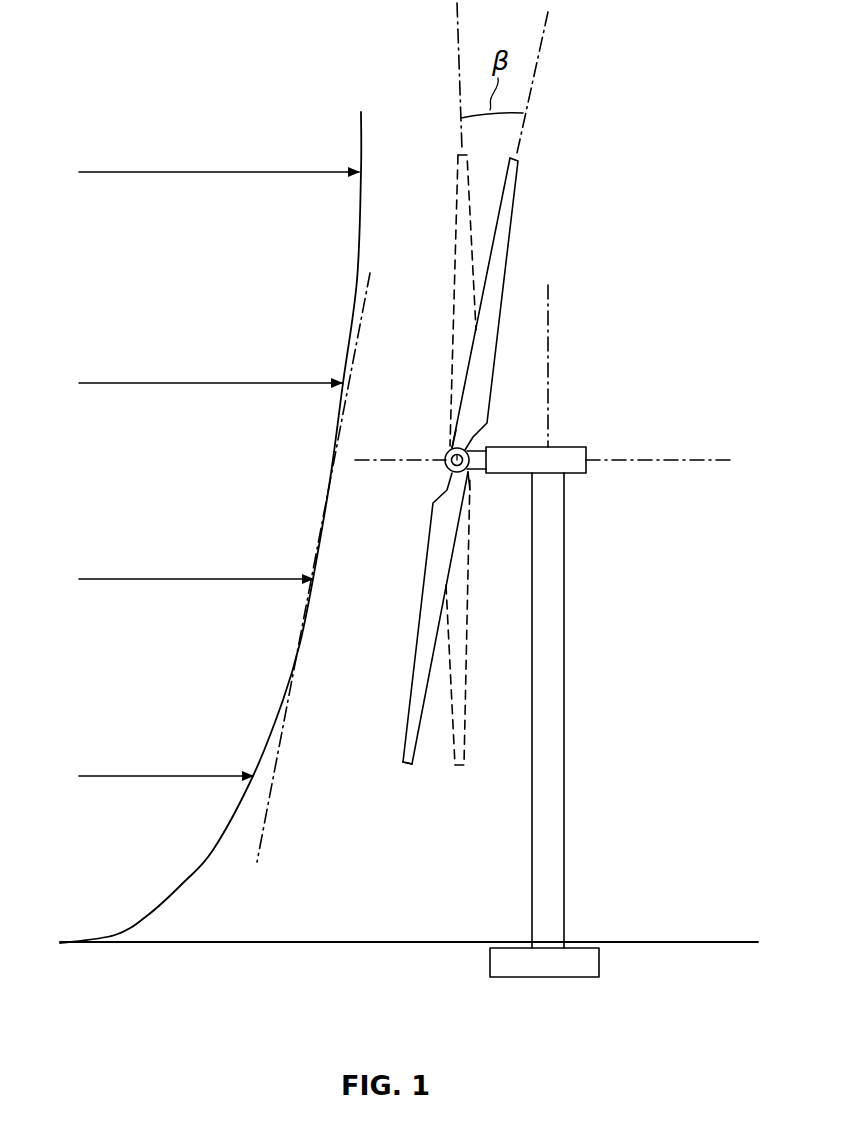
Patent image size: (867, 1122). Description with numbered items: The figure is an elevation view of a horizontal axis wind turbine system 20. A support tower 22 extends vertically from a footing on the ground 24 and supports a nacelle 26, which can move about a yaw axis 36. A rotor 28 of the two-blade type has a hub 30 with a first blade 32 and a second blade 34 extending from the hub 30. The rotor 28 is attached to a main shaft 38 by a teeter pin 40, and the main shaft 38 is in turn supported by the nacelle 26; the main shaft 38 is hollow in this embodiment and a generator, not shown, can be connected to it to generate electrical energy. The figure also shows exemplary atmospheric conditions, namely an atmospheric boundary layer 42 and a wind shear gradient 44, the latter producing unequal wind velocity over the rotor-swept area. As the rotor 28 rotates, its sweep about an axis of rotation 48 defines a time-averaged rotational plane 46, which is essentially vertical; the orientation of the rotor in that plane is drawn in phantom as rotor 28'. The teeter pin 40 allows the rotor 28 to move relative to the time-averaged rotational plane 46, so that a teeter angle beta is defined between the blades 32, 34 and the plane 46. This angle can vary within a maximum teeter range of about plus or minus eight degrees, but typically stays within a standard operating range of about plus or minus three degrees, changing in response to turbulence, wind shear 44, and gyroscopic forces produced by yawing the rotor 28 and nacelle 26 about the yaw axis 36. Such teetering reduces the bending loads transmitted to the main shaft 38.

The horizontal axis wind turbine system 20 is at (677, 688).
The support tower 22 is at (564, 613).
The ground 24 is at (680, 942).
The nacelle 26 is at (510, 447).
The rotor 28 is at (417, 618).
The rotor in time-averaged rotational plane 28' is at (428, 460).
The hub 30 is at (446, 484).
The first blade 32 is at (515, 192).
The second blade 34 is at (408, 715).
The yaw axis 36 is at (549, 297).
The main shaft 38 is at (468, 475).
The teeter pin 40 is at (450, 447).
The atmospheric boundary layer 42 is at (360, 136).
The wind shear gradient 44 is at (262, 832).
The time-averaged rotational plane 46 is at (457, 22).
The axis of rotation 48 is at (548, 26).